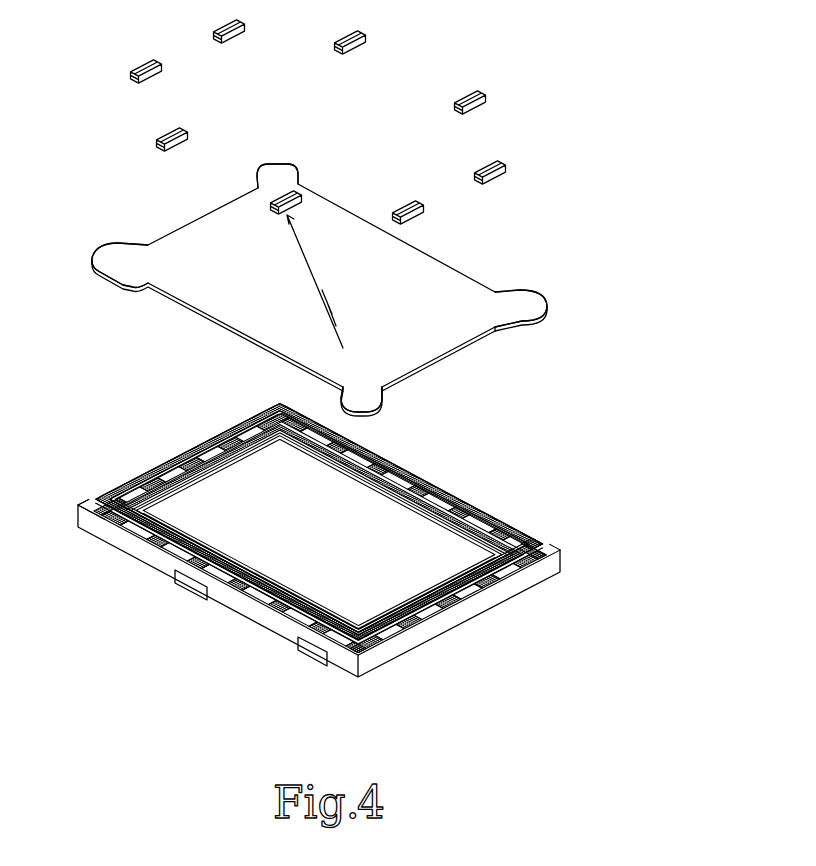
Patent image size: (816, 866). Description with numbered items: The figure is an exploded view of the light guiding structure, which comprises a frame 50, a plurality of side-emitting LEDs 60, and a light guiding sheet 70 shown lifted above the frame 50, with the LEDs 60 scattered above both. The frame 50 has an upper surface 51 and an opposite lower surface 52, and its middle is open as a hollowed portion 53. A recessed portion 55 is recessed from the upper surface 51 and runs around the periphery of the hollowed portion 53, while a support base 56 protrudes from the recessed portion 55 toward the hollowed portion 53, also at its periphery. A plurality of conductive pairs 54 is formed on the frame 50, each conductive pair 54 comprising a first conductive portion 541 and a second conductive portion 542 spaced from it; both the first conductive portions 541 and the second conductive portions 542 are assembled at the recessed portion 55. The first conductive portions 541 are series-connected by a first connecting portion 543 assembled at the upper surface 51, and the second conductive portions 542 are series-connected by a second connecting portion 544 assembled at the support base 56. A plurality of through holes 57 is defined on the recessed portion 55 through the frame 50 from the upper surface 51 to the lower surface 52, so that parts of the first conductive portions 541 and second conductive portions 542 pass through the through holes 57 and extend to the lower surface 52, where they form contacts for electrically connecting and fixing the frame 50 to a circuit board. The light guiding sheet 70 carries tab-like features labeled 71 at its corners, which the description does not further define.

The frame 50 is at (250, 610).
The upper surface 51 is at (200, 442).
The lower surface 52 is at (130, 557).
The hollowed portion 53 is at (157, 473).
The conductive pair 54 is at (363, 512).
The first conductive portion 541 is at (487, 513).
The second conductive portion 542 is at (463, 505).
The first connecting portion 543 is at (553, 545).
The second connecting portion 544 is at (430, 607).
The recessed portion 55 is at (90, 495).
The support base 56 is at (213, 480).
The through holes 57 is at (447, 507).
The side-emitting LEDs 60 is at (140, 66).
The light guiding sheet 70 is at (422, 347).
The positioning tabs 71 is at (279, 173).